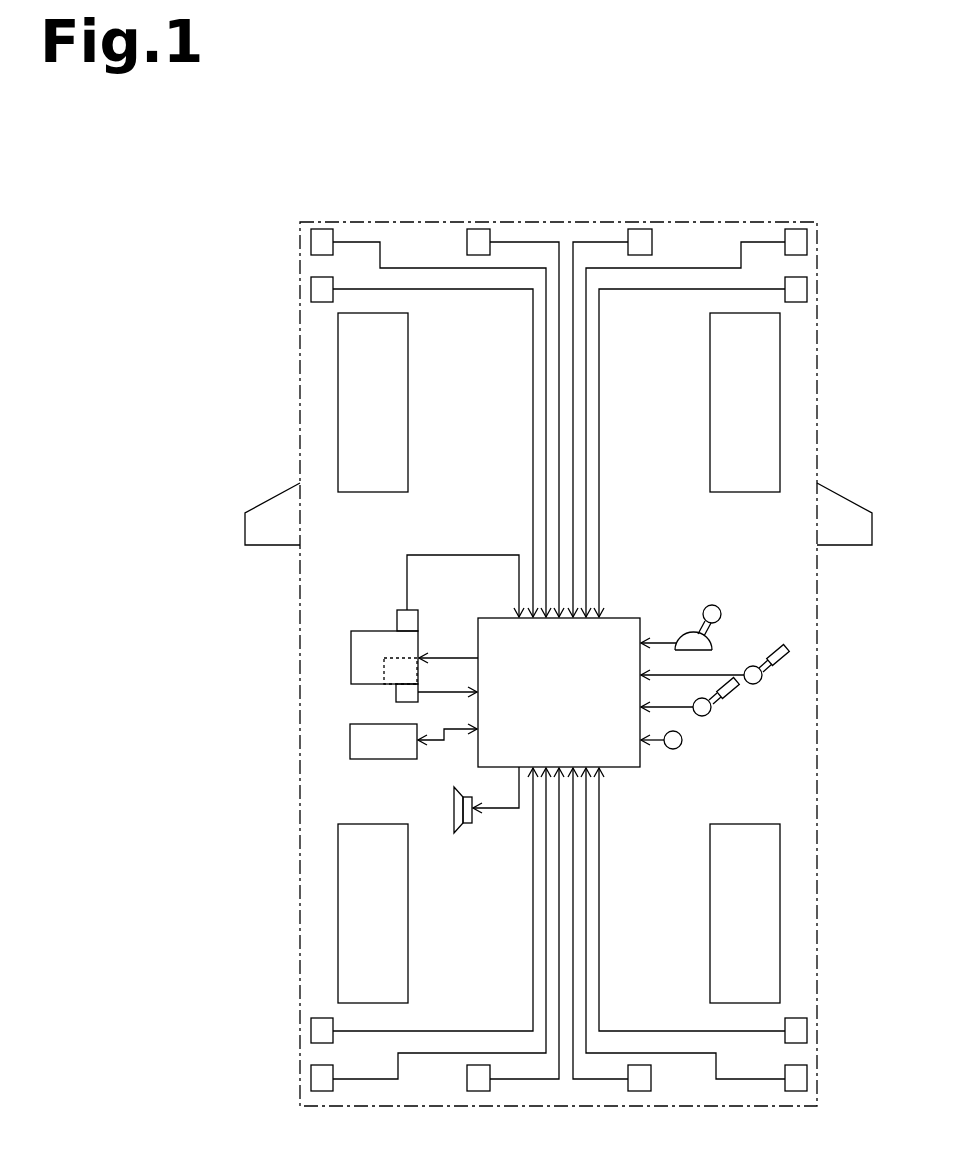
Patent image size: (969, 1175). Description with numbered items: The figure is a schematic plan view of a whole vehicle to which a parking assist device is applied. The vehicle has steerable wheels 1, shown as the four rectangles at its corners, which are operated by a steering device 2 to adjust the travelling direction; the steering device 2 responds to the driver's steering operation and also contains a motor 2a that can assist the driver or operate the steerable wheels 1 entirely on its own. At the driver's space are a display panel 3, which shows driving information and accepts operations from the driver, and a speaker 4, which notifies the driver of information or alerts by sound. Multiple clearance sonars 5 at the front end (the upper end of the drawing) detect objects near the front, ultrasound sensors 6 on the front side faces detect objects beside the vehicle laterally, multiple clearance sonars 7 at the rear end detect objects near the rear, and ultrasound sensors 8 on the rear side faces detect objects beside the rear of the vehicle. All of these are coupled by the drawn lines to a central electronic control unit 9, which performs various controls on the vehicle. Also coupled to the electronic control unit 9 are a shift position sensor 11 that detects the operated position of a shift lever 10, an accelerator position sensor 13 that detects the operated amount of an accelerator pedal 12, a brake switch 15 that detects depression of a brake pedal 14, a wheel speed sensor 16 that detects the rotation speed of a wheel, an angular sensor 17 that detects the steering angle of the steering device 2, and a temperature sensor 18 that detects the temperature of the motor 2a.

The steerable wheels 1 is at (408, 402).
The steering device 2 is at (362, 631).
The motor 2a is at (417, 673).
The display panel 3 is at (350, 742).
The speaker 4 is at (450, 806).
The clearance sonars 5 is at (322, 228).
The ultrasound sensors 6 is at (311, 289).
The clearance sonars 7 is at (322, 1091).
The ultrasound sensors 8 is at (311, 1031).
The electronic control unit 9 is at (492, 617).
The shift lever 10 is at (716, 606).
The shift position sensor 11 is at (686, 637).
The accelerator pedal 12 is at (779, 648).
The accelerator position sensor 13 is at (747, 668).
The brake pedal 14 is at (740, 698).
The brake switch 15 is at (703, 717).
The wheel speed sensor 16 is at (675, 750).
The angular sensor 17 is at (402, 610).
The temperature sensor 18 is at (398, 700).